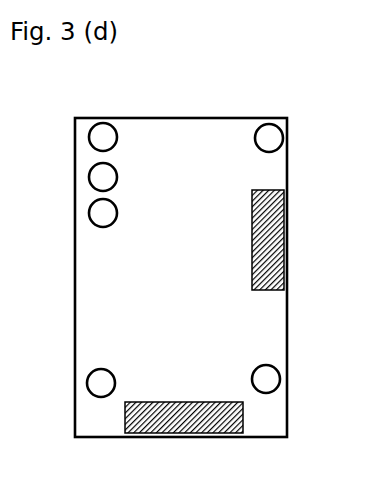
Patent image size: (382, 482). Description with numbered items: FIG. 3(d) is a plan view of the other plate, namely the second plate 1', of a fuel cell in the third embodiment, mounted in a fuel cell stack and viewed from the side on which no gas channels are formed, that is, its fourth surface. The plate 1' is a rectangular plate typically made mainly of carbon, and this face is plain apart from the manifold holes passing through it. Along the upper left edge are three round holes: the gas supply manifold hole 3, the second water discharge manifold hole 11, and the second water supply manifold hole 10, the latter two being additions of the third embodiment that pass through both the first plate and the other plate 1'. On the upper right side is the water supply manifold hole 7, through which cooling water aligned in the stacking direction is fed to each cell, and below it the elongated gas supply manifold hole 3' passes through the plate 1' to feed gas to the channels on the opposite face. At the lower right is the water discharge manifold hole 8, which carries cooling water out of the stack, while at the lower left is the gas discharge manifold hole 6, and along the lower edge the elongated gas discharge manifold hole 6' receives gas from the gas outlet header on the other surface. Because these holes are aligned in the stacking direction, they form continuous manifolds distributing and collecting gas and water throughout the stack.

The other plate (second plate) 1' is at (162, 277).
The gas supply manifold hole 3 is at (78, 143).
The gas supply manifold hole 3' is at (301, 239).
The gas discharge manifold hole 6 is at (76, 404).
The gas discharge manifold hole 6' is at (166, 442).
The water supply manifold hole 7 is at (269, 130).
The water discharge manifold hole 8 is at (270, 389).
The second water supply manifold hole 10 is at (97, 218).
The second water discharge manifold hole 11 is at (100, 127).